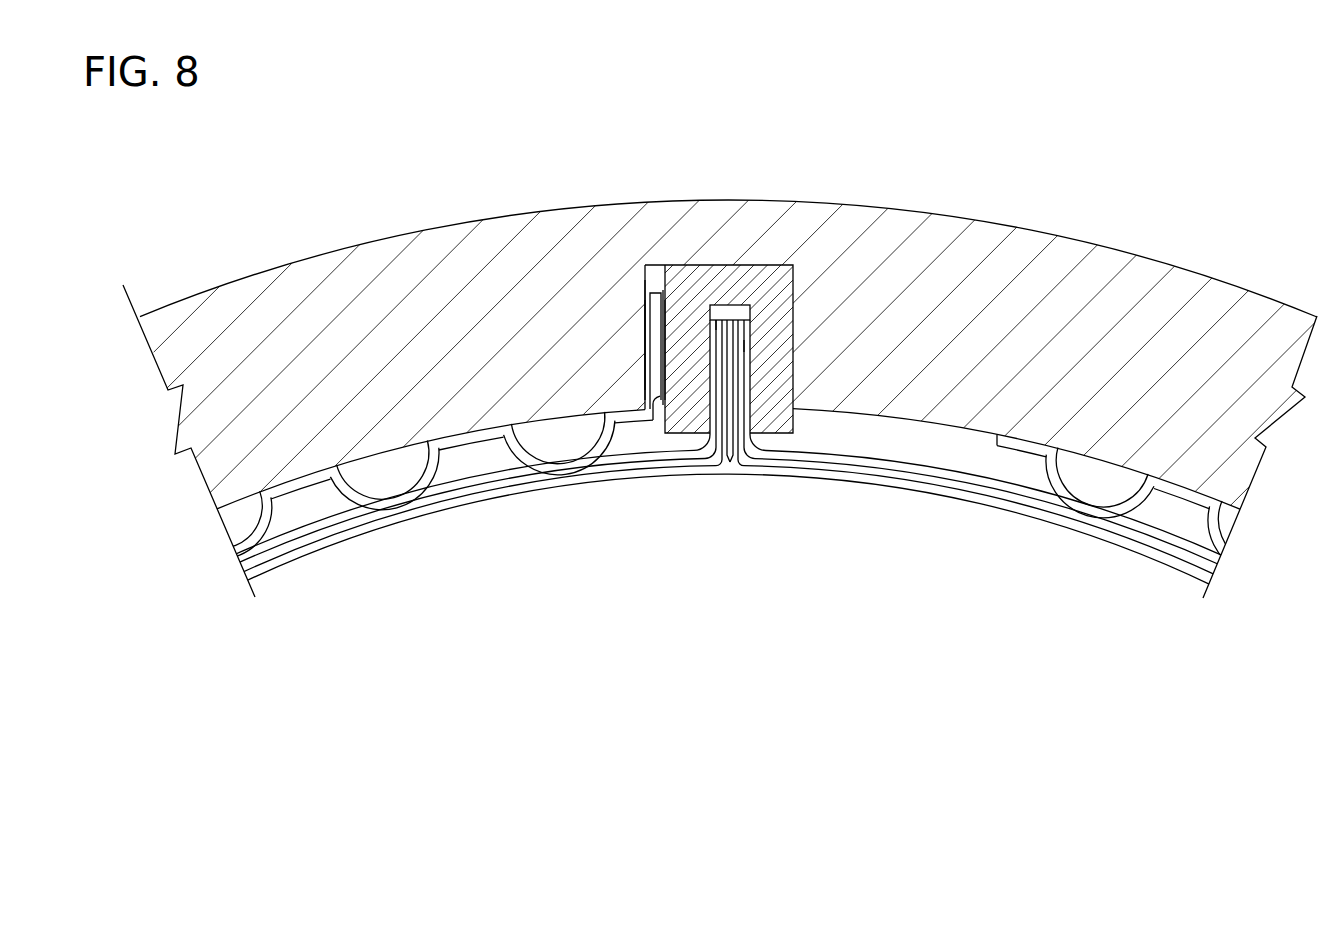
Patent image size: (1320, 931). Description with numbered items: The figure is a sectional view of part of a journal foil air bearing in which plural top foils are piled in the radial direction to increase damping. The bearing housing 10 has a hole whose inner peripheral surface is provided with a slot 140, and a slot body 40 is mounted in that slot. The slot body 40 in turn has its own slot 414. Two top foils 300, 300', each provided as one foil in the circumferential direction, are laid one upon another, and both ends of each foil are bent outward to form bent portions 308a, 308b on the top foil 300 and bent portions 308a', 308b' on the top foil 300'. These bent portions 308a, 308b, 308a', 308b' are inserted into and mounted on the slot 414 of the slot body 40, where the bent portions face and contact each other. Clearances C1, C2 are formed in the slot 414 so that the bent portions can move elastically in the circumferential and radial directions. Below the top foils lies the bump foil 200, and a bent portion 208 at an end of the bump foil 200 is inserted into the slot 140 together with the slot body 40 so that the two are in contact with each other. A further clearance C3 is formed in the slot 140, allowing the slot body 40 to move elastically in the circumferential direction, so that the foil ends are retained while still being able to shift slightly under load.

The bearing housing 10 is at (1150, 293).
The slot body 40 is at (763, 272).
The slot 140 is at (655, 277).
The slot 414 is at (750, 308).
The bent portion 208 is at (653, 330).
The clearance C3 is at (647, 307).
The clearance C2 is at (723, 303).
The clearance C1 is at (745, 347).
The top foil 300 is at (728, 465).
The top foil 300' is at (415, 511).
The bent portion 308b is at (479, 446).
The bent portion 308a is at (979, 448).
The bent portion 308b' is at (697, 457).
The bent portion 308a' is at (806, 457).
The bump foil 200 is at (1060, 478).